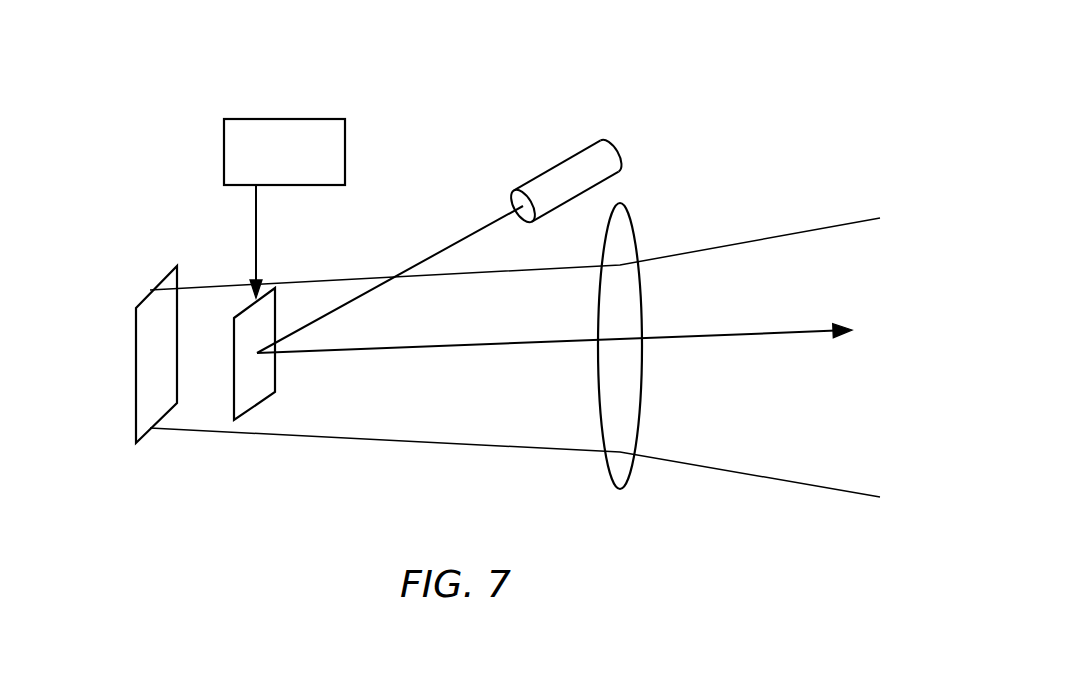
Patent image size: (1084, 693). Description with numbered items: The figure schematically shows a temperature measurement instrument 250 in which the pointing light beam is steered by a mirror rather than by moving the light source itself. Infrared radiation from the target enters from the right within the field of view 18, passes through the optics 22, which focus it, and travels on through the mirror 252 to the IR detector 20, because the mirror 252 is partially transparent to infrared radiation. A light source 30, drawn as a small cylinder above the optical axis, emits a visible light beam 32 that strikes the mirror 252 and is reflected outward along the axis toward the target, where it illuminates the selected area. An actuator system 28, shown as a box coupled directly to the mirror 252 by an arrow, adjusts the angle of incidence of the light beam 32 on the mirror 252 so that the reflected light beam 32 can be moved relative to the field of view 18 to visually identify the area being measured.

The field of view 18 is at (790, 237).
The IR detector 20 is at (137, 362).
The optics 22 is at (625, 480).
The actuator system 28 is at (272, 122).
The light source 30 is at (577, 160).
The light beam 32 is at (757, 335).
The temperature measurement instrument 250 is at (447, 140).
The mirror 252 is at (240, 395).